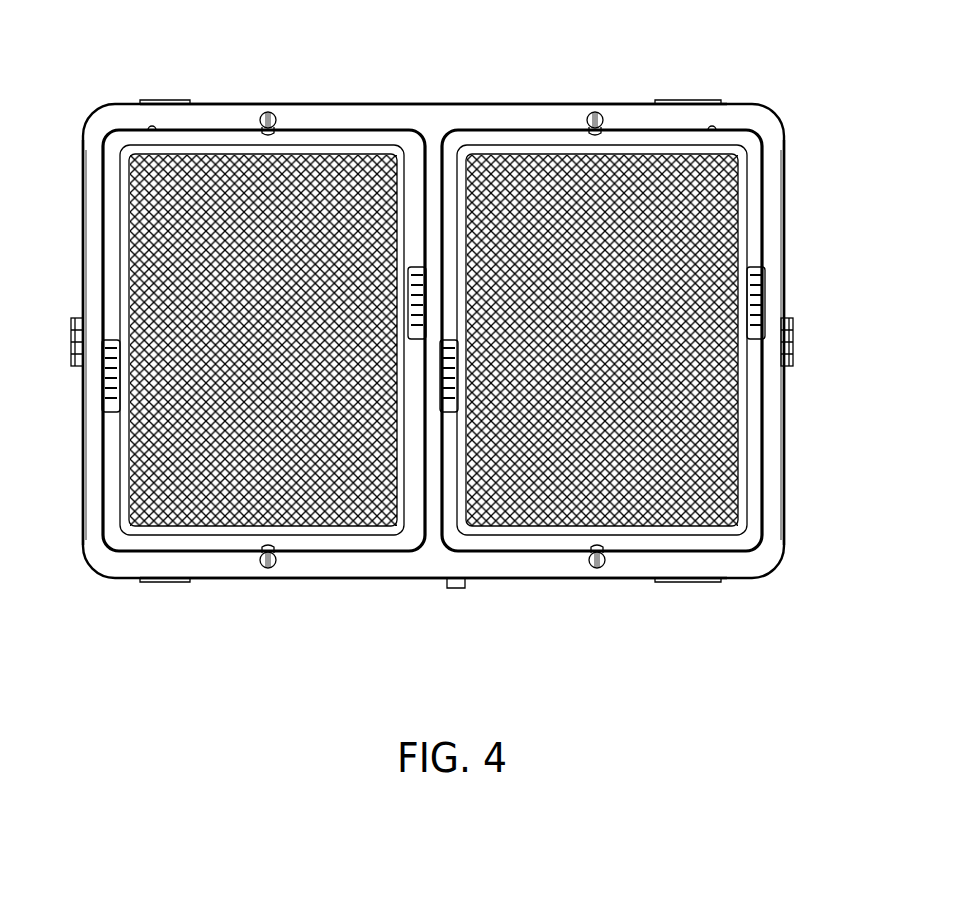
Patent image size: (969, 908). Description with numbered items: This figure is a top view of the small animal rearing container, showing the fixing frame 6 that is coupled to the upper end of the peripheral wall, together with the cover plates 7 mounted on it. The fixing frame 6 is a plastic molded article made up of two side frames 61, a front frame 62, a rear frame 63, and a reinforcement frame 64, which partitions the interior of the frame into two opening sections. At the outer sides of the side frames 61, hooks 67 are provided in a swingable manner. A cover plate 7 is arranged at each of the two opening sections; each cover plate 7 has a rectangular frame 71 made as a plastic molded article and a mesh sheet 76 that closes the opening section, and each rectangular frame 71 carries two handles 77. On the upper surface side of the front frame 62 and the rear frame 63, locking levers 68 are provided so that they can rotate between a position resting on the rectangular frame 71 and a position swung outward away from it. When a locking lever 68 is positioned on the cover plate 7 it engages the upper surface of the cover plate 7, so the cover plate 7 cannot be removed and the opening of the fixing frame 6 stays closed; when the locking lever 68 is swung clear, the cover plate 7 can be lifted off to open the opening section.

The fixing frame 6 is at (489, 100).
The cover plate 7 is at (155, 232).
The side frame 61 is at (95, 443).
The front frame 62 is at (388, 566).
The rear frame 63 is at (372, 116).
The reinforcement frame 64 is at (430, 217).
The hook 67 is at (70, 342).
The locking lever 68 is at (272, 112).
The rectangular frame 71 is at (113, 522).
The mesh sheet 76 is at (233, 180).
The handle 77 is at (118, 366).